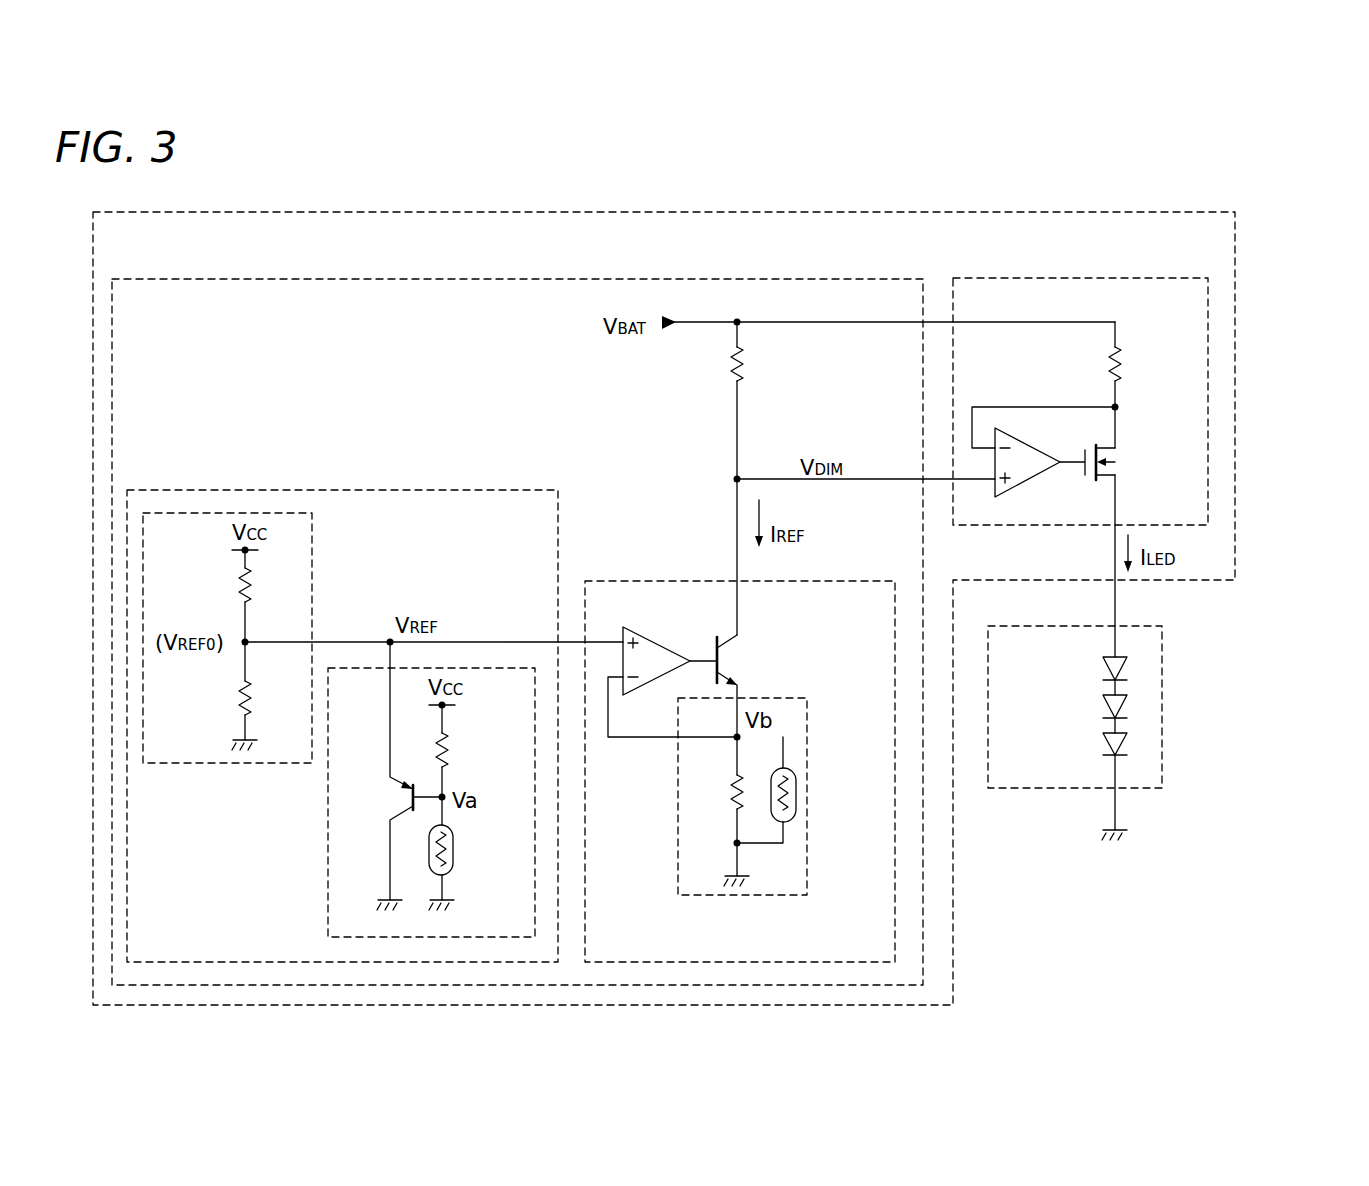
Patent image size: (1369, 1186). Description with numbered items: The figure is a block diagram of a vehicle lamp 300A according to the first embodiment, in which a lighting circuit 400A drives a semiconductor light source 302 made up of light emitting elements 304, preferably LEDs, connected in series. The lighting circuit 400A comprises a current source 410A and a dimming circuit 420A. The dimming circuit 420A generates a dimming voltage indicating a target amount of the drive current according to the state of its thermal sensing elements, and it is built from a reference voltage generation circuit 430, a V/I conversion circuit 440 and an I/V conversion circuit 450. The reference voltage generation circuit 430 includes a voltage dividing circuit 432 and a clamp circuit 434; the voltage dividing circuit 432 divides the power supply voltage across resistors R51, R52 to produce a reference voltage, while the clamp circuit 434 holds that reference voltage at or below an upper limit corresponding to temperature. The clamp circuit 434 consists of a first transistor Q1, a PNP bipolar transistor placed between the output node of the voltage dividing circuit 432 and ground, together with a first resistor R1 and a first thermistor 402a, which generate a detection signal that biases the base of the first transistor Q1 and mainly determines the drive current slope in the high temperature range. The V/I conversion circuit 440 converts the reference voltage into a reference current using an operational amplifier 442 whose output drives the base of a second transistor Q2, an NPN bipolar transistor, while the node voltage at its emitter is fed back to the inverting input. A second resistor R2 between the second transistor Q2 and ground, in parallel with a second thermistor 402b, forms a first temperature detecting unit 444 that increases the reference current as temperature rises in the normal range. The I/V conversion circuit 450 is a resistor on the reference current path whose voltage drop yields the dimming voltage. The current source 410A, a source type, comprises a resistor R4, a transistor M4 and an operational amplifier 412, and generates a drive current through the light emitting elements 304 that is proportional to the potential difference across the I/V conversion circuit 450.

The vehicle lamp 300A is at (1292, 212).
The lighting circuit 400A is at (1215, 190).
The dimming circuit 420A is at (785, 279).
The current source 410A is at (1090, 278).
The reference voltage generation circuit 430 is at (443, 490).
The voltage dividing circuit 432 is at (312, 545).
The clamp circuit 434 is at (328, 878).
The V/I conversion circuit 440 is at (622, 581).
The operational amplifier 442 is at (652, 640).
The first temperature detecting unit 444 is at (678, 849).
The I/V conversion circuit 450 is at (745, 362).
The operational amplifier 412 is at (1030, 482).
The semiconductor light source 302 is at (1162, 648).
The light emitting element 304 is at (1100, 665).
The first thermistor 402a is at (478, 850).
The second thermistor 402b is at (796, 784).
The first transistor Q1 is at (408, 798).
The second transistor Q2 is at (742, 662).
The first resistor R1 is at (459, 750).
The second resistor R2 is at (731, 810).
The resistor R4 is at (1126, 362).
The resistor R51 is at (269, 585).
The resistor R52 is at (269, 698).
The transistor M4 is at (1118, 465).